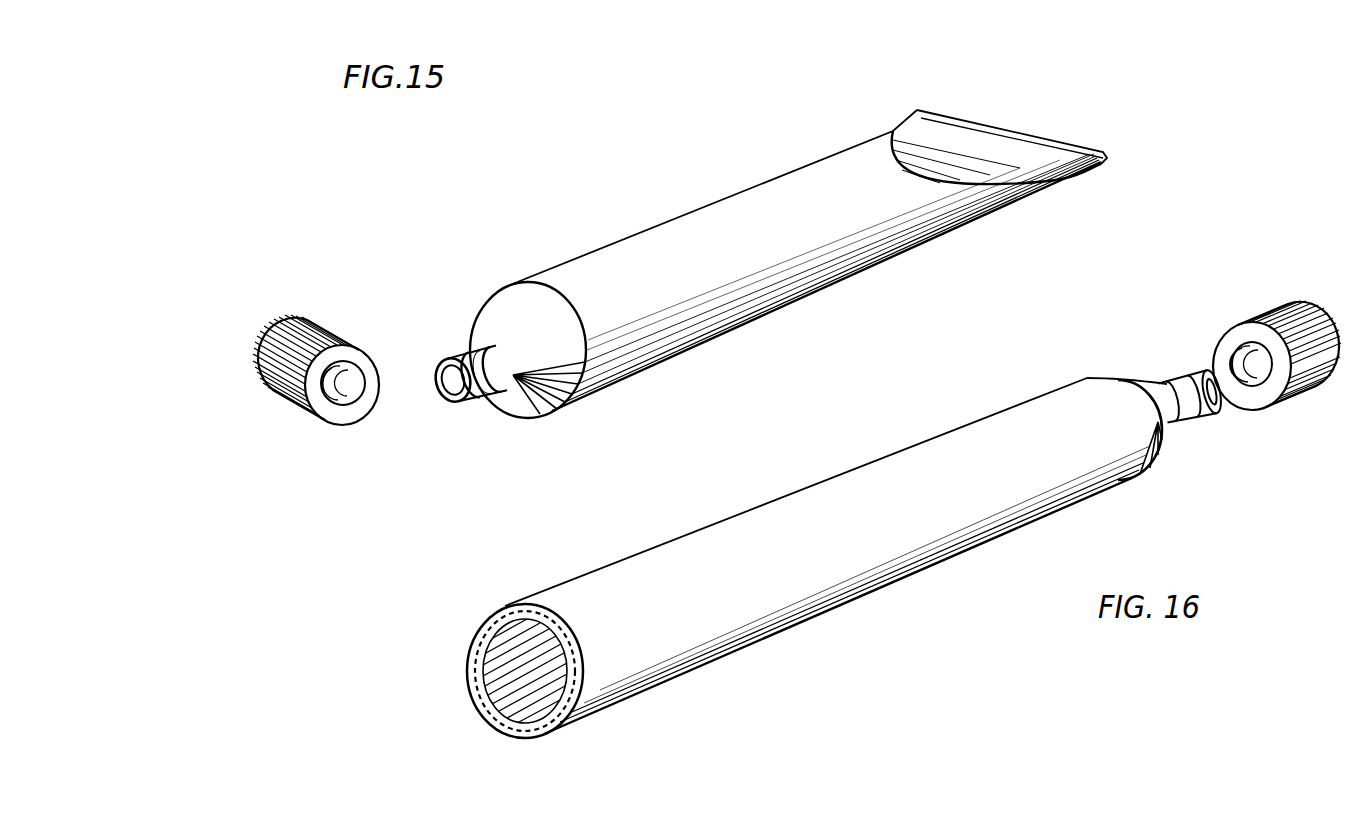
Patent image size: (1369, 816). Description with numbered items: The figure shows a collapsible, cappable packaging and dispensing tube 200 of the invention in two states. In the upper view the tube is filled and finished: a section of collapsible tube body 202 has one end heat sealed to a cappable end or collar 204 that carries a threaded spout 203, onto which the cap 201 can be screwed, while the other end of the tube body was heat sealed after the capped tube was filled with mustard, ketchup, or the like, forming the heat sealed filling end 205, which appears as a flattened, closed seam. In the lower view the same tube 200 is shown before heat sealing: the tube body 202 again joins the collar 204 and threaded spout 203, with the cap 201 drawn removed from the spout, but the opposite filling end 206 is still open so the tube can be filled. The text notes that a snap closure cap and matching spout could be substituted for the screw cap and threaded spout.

In FIG. 15, the collapsible tube assembly 200 is at (789, 255).
In FIG. 16, the collapsible tube assembly 200 is at (804, 532).
In FIG. 15, the cap 201 is at (238, 358).
In FIG. 16, the cap 201 is at (1307, 317).
In FIG. 15, the tube body 202 is at (828, 237).
In FIG. 16, the tube body 202 is at (815, 510).
In FIG. 15, the threaded spout 203 is at (456, 350).
In FIG. 16, the threaded spout 203 is at (1175, 383).
In FIG. 15, the cappable end or collar 204 is at (523, 393).
In FIG. 16, the cappable end or collar 204 is at (1173, 437).
In FIG. 15, the heat sealed filling end 205 is at (1100, 155).
In FIG. 16, the filling end 206 is at (472, 633).